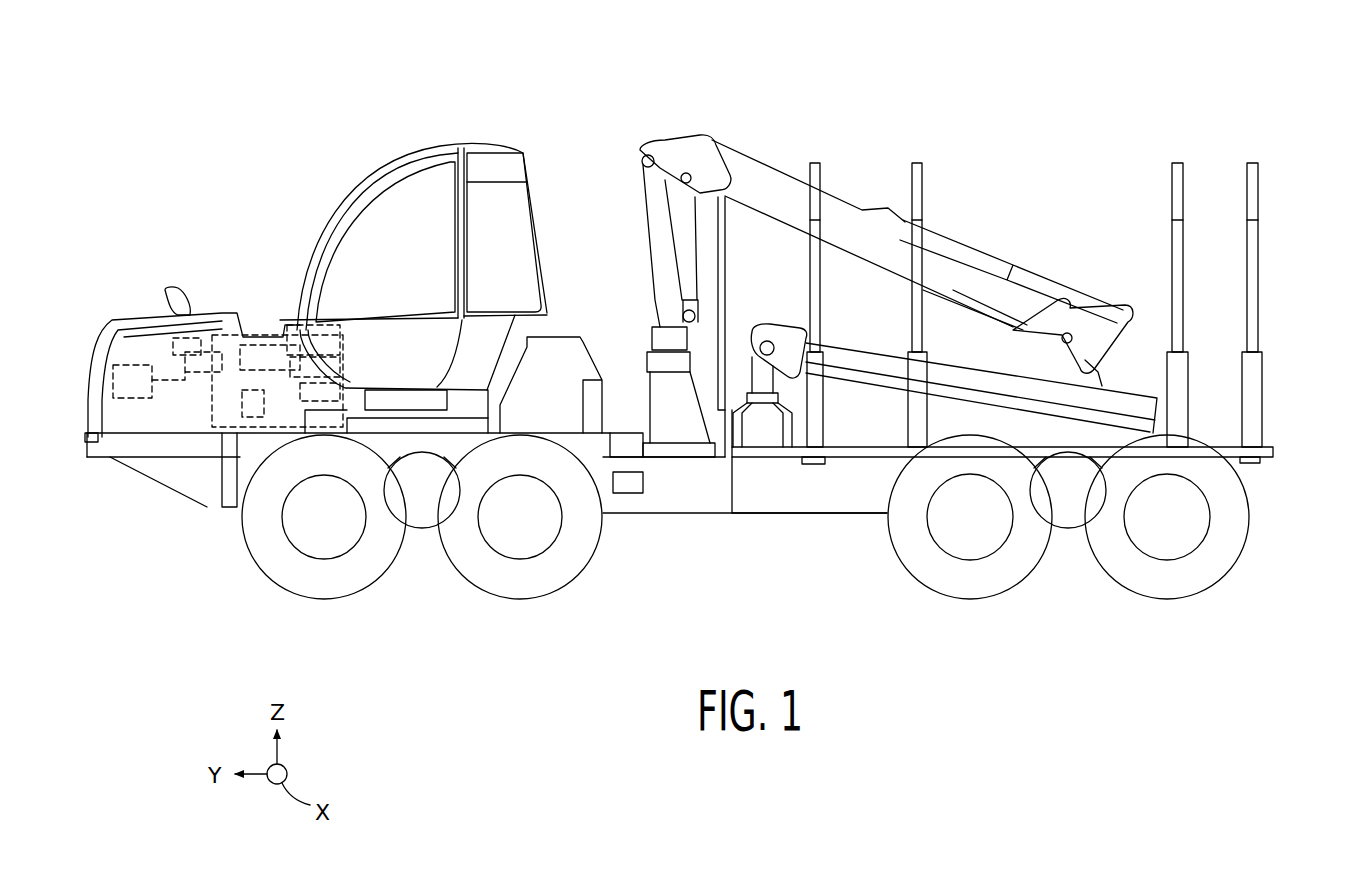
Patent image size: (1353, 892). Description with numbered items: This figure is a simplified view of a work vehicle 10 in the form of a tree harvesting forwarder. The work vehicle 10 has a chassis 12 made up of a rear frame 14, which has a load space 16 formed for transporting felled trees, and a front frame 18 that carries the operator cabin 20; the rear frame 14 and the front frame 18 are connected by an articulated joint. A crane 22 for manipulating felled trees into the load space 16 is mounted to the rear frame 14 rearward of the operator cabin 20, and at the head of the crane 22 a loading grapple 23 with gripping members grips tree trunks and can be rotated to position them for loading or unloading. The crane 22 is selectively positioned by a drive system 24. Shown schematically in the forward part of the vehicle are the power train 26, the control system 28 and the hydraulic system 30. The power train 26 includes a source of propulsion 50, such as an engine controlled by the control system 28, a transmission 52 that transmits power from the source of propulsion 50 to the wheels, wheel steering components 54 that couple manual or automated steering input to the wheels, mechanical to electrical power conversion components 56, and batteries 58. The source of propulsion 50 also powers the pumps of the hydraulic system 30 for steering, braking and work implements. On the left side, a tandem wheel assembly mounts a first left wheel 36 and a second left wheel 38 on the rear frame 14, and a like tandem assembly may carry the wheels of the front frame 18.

The work vehicle 10 is at (297, 85).
The chassis 12 is at (700, 515).
The rear frame 14 is at (830, 493).
The load space 16 is at (1127, 372).
The front frame 18 is at (440, 442).
The operator cabin 20 is at (373, 193).
The crane 22 is at (848, 212).
The loading grapple 23 is at (742, 430).
The drive system 24 is at (150, 290).
The power train 26 is at (262, 320).
The control system 28 is at (132, 363).
The hydraulic system 30 is at (188, 322).
The first left wheel 36 is at (312, 543).
The second left wheel 38 is at (515, 543).
The source of propulsion 50 is at (285, 322).
The transmission 52 is at (242, 410).
The wheel steering components 54 is at (358, 328).
The mechanical to electrical power conversion components 56 is at (342, 380).
The batteries 58 is at (342, 398).